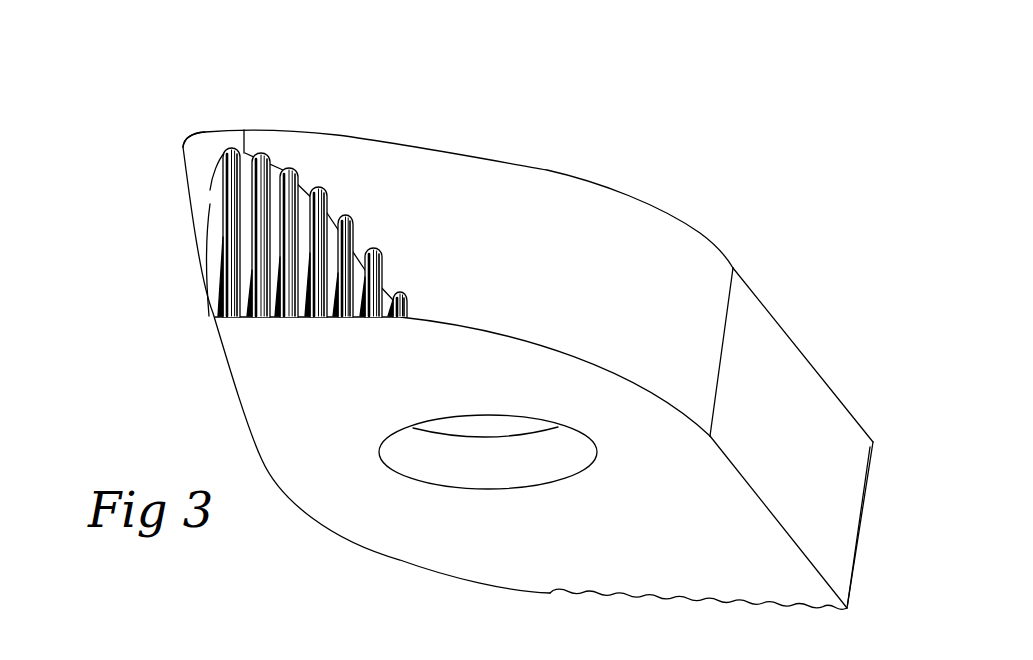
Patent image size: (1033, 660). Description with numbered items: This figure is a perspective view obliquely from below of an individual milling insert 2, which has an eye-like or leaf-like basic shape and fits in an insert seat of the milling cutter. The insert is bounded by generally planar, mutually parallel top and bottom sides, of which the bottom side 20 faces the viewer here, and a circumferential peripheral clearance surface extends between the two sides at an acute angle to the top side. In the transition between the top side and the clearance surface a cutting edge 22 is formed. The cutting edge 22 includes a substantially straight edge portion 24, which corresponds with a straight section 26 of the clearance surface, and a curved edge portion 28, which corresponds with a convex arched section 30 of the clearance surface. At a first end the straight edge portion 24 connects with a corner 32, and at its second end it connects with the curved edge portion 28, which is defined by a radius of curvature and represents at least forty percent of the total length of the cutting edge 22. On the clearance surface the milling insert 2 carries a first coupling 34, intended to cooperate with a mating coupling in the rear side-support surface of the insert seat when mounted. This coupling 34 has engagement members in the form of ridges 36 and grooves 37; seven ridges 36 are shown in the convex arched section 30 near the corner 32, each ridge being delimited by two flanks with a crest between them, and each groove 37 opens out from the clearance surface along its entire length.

The milling insert 2 is at (426, 122).
The bottom side 20 is at (660, 526).
The cutting edge 22 is at (726, 224).
The straight edge portion 24 is at (816, 364).
The straight section of the clearance surface 26 is at (820, 467).
The curved edge portion 28 is at (547, 170).
The convex arched section of the clearance surface 30 is at (618, 287).
The corner 32 is at (190, 142).
The first coupling 34 is at (235, 277).
The ridge 36 is at (247, 318).
The groove 37 is at (318, 316).